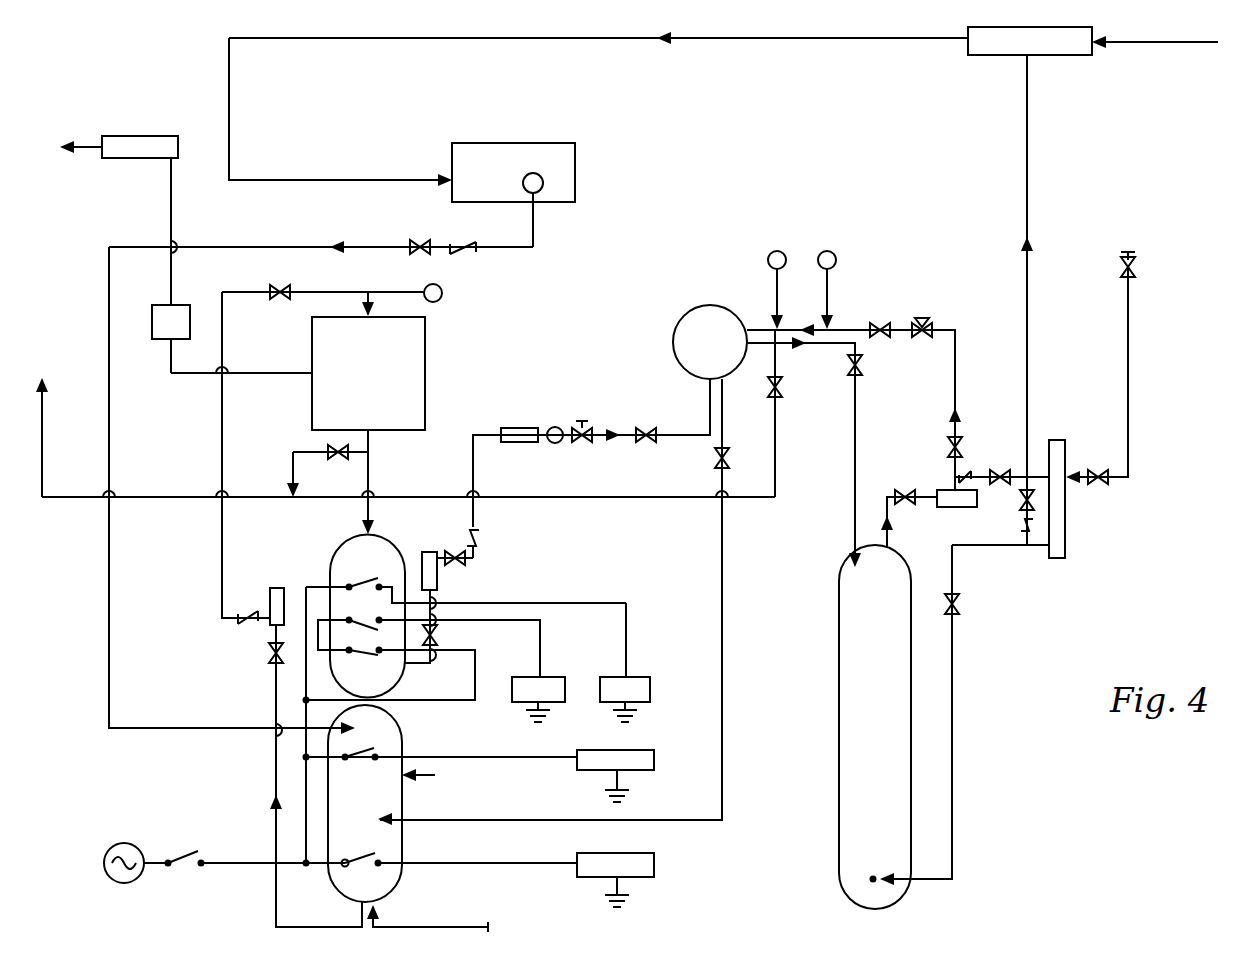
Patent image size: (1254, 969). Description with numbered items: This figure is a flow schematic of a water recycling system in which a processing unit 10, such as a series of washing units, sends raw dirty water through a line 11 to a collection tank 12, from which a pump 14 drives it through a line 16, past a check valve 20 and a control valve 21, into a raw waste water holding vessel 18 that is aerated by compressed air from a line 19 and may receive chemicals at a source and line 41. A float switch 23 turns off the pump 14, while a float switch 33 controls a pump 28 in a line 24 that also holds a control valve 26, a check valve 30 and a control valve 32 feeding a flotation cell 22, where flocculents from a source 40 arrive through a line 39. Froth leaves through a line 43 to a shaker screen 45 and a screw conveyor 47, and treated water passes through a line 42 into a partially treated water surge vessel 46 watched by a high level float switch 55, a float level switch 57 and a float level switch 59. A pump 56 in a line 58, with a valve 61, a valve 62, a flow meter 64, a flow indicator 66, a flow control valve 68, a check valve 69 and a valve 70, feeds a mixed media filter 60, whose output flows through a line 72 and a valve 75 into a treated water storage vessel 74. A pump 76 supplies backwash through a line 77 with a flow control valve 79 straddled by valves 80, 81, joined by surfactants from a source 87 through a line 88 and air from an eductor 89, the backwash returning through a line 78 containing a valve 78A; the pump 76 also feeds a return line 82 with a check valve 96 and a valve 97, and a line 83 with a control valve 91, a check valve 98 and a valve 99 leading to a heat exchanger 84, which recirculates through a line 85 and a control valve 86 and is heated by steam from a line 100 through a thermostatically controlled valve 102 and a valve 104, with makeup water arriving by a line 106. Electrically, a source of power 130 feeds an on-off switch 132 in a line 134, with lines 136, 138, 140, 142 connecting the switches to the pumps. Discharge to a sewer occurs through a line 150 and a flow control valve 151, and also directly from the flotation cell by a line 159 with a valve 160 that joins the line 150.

The processing unit 10 is at (990, 55).
The line 11 is at (800, 38).
The collection tank 12 is at (578, 165).
The pump 14 is at (541, 190).
The line 16 is at (268, 247).
The raw waste water holding vessel 18 is at (404, 800).
The line 19 is at (462, 926).
The check valve 20 is at (468, 244).
The control valve 21 is at (430, 226).
The flotation cell 22 is at (312, 355).
The float switch 23 is at (378, 752).
The line 24 is at (222, 455).
The control valve 26 is at (266, 654).
The pump 28 is at (276, 588).
The check valve 30 is at (240, 620).
The control valve 32 is at (278, 288).
The float switch 33 is at (380, 855).
The line 39 is at (410, 290).
The source of flocculents 40 is at (441, 299).
The source and line 41 is at (436, 775).
The line 42 is at (378, 521).
The line 43 is at (258, 378).
The shaker screen 45 is at (155, 337).
The partially treated water surge vessel 46 is at (404, 675).
The screw conveyor 47 is at (185, 122).
The high level float switch 55 is at (376, 618).
The pump 56 is at (438, 590).
The float level switch 57 is at (376, 656).
The line 58 is at (476, 468).
The float level switch 59 is at (376, 585).
The mixed media filter 60 is at (674, 330).
The valve 61 is at (436, 633).
The valve 62 is at (468, 562).
The flow meter 64 is at (520, 428).
The flow indicator 66 is at (556, 427).
The flow control valve 68 is at (582, 422).
The check valve 69 is at (481, 532).
The valve 70 is at (646, 428).
The line 72 is at (855, 508).
The treated water storage vessel 74 is at (875, 727).
The valve 75 is at (848, 365).
The pump 76 is at (952, 508).
The line 77 is at (957, 386).
The line 78 is at (722, 638).
The valve 78A is at (714, 460).
The flow control valve 79 is at (922, 316).
The valve 80 is at (886, 302).
The valve 81 is at (948, 451).
The return line 82 is at (1028, 410).
The line 83 is at (1040, 470).
The heat exchanger 84 is at (1066, 532).
The line 85 is at (954, 700).
The control valve 86 is at (960, 604).
The source of surfactants and solvents 87 is at (768, 261).
The line 88 is at (778, 298).
The eductor 89 is at (834, 254).
The control valve 91 is at (910, 490).
The check valve 96 is at (1020, 545).
The valve 97 is at (1066, 500).
The check valve 98 is at (968, 472).
The valve 99 is at (985, 474).
The line 100 is at (1130, 345).
The thermostatically controlled valve 102 is at (1100, 468).
The valve 104 is at (1153, 265).
The line 106 is at (1200, 42).
The source of power 130 is at (126, 884).
The on-off switch 132 is at (180, 850).
The line 134 is at (245, 870).
The line 136 is at (497, 866).
The line 138 is at (524, 757).
The line 140 is at (476, 661).
The line 142 is at (627, 640).
The line 150 is at (777, 445).
The flow control valve 151 is at (780, 392).
The line 159 is at (296, 490).
The valve 160 is at (340, 466).